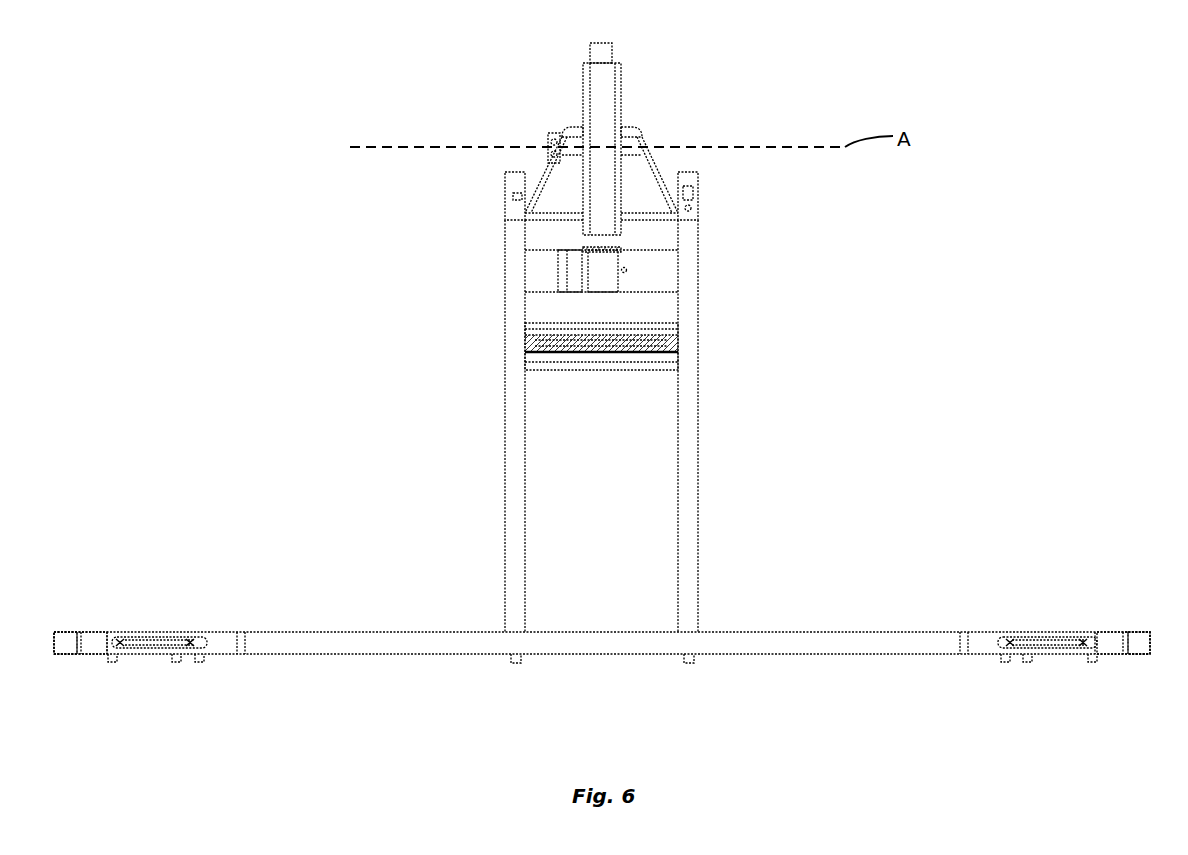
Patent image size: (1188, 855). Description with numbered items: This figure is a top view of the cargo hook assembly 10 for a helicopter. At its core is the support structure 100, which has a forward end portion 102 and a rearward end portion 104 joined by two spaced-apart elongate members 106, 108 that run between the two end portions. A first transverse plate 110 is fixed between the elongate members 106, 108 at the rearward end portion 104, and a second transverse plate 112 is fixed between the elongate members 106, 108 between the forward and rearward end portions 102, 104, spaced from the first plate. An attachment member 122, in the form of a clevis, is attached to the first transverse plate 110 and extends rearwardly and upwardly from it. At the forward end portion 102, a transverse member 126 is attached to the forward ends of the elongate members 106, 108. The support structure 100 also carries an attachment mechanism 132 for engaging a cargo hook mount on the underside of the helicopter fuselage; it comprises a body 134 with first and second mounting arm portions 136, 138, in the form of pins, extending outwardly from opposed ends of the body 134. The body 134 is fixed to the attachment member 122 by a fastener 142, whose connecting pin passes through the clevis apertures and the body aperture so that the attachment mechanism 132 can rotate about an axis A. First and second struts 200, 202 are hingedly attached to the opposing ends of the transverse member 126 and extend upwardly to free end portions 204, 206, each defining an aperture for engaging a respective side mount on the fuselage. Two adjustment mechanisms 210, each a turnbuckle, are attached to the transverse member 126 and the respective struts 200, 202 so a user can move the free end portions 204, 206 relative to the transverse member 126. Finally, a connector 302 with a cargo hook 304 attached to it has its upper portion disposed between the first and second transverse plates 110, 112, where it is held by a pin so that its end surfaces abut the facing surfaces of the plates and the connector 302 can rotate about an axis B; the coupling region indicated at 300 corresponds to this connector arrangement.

The cargo hook assembly 10 is at (160, 92).
The support structure 100 is at (500, 173).
The forward end portion 102 is at (602, 653).
The rearward end portion 104 is at (710, 181).
The elongate member 106 is at (513, 470).
The elongate member 108 is at (687, 470).
The first transverse plate 110 is at (665, 232).
The second transverse plate 112 is at (538, 316).
The attachment member 122 is at (632, 167).
The transverse member 126 is at (603, 647).
The attachment mechanism 132 is at (590, 131).
The body 134 is at (611, 103).
The first mounting arm portion 136 is at (600, 52).
The second mounting arm portion 138 is at (598, 246).
The fastener 142 is at (546, 137).
The first strut 200 is at (93, 652).
The second strut 202 is at (1110, 652).
The free end portion 204 is at (60, 632).
The free end portion 206 is at (1147, 632).
The adjustment mechanism 210 is at (153, 635).
The coupling assembly 300 is at (606, 277).
The connector 302 is at (600, 272).
The cargo hook 304 is at (562, 268).